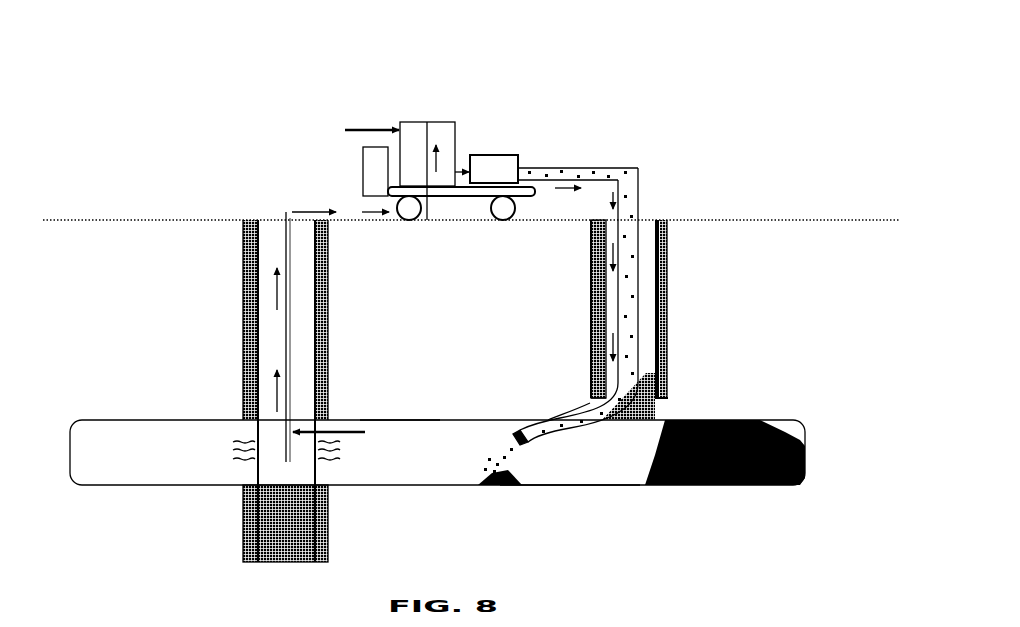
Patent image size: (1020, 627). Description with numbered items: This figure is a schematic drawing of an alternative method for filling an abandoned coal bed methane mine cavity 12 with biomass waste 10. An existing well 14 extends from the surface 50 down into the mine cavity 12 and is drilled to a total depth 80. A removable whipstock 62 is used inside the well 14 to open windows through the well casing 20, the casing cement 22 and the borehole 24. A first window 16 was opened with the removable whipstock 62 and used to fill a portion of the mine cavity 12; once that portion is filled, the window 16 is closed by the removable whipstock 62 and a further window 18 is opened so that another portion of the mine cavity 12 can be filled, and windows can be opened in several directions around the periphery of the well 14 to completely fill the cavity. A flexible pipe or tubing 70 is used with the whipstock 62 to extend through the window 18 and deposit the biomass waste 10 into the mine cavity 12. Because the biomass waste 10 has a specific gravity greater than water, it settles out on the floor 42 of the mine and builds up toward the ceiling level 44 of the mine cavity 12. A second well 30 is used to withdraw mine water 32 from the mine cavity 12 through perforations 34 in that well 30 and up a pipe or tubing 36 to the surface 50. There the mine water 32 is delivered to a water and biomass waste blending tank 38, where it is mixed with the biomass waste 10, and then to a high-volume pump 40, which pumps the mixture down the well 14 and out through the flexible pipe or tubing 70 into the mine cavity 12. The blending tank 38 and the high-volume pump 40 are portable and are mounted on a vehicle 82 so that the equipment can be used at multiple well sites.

The biomass waste 10 is at (641, 188).
The abandoned mine cavity 12 is at (569, 456).
The existing well 14 is at (584, 310).
The window 16 is at (672, 398).
The window 18 is at (587, 397).
The well casing 20 is at (661, 240).
The casing cement 22 is at (662, 264).
The borehole 24 is at (669, 295).
The second well 30 is at (234, 303).
The mine water 32 is at (376, 442).
The perforations 34 is at (227, 442).
The pipe or tubing 36 is at (291, 253).
The water and biomass waste blending tank 38 is at (357, 130).
The high-volume pump 40 is at (505, 153).
The floor 42 is at (566, 488).
The ceiling level 44 is at (400, 417).
The surface 50 is at (97, 218).
The removable whipstock 62 is at (646, 385).
The flexible pipe or tubing 70 is at (555, 413).
The total depth 80 is at (666, 418).
The vehicle 82 is at (469, 129).